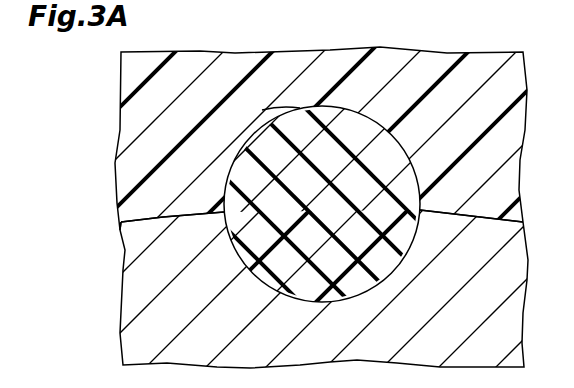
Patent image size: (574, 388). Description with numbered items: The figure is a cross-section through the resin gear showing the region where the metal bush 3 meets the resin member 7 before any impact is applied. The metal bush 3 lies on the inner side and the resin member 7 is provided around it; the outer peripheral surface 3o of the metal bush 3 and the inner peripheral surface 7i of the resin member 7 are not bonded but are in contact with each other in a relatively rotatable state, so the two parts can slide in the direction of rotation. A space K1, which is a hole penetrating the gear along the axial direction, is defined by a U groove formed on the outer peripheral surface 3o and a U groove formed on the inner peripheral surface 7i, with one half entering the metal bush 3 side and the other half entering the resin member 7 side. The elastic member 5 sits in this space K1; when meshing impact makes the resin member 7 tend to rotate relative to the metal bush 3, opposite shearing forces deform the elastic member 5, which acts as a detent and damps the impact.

The metal bush 3 is at (513, 318).
The outer peripheral surface of the metal bush 3o is at (484, 212).
The elastic member 5 is at (256, 170).
The resin member 7 is at (513, 133).
The inner peripheral surface of the resin member 7i is at (497, 219).
The space K1 is at (294, 113).